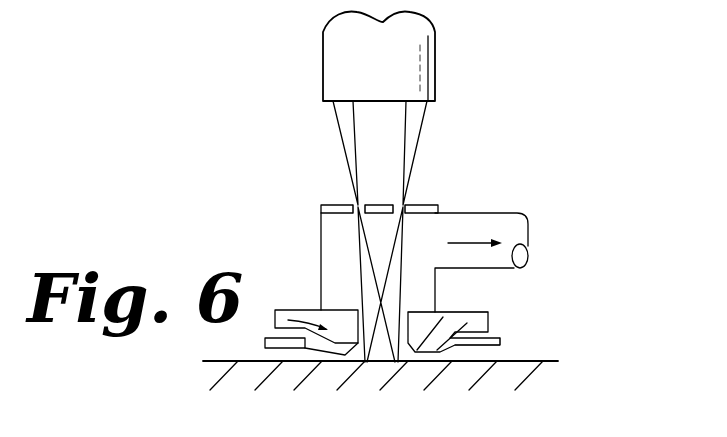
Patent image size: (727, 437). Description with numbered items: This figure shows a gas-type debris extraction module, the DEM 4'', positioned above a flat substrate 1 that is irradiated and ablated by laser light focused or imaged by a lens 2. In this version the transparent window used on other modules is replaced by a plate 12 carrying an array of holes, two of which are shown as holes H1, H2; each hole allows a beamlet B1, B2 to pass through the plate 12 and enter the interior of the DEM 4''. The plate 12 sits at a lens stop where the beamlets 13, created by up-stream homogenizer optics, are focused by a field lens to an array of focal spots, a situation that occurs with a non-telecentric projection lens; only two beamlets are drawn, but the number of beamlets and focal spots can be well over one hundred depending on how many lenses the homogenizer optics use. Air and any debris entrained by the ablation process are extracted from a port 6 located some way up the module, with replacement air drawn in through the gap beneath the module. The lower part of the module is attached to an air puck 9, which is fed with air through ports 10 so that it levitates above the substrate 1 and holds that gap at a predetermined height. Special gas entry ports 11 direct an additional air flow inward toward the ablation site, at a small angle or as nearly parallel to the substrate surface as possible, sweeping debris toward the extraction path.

The substrate 1 is at (510, 358).
The lens 2 is at (435, 67).
The DEM 4'' is at (281, 248).
The port 6 is at (527, 225).
The air puck 9 is at (337, 317).
The ports 10 is at (480, 343).
The gas entry ports 11 is at (480, 312).
The plate 12 is at (428, 207).
The beamlets 13 is at (430, 110).
The beamlet B1 is at (345, 118).
The beamlet B2 is at (410, 142).
The hole H1 is at (356, 204).
The hole H2 is at (405, 206).